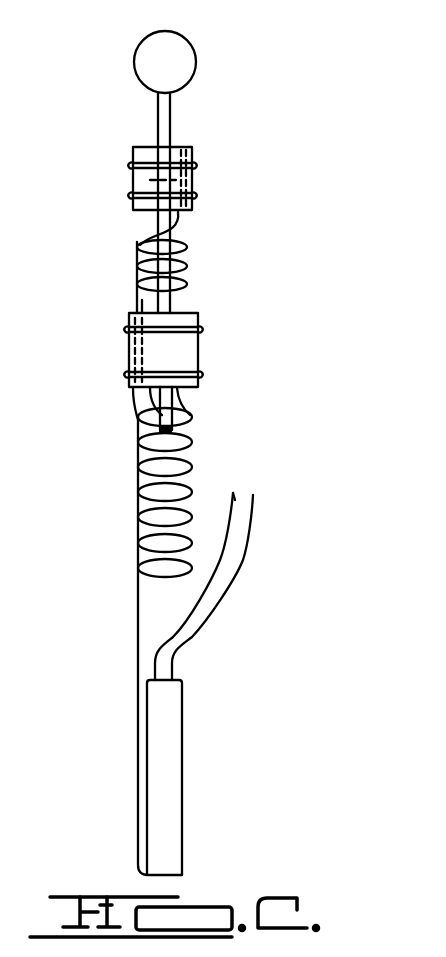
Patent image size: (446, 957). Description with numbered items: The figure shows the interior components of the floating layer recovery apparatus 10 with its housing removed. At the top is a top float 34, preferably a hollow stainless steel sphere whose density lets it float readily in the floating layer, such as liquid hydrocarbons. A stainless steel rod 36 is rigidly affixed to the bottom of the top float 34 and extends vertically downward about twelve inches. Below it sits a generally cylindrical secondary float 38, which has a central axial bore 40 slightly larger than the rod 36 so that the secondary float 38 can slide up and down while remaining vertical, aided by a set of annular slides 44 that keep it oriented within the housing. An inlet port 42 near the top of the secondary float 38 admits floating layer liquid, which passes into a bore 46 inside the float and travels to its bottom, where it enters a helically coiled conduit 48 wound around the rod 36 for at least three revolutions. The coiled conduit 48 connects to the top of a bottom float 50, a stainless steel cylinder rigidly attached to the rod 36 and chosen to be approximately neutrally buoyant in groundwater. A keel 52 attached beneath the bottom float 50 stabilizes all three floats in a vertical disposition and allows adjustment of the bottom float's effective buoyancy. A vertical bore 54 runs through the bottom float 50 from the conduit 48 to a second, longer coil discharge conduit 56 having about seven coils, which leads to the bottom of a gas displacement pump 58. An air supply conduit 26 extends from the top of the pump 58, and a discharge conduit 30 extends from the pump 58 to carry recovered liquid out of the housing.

The floating layer recovery apparatus 10 is at (265, 90).
The air supply conduit 26 is at (241, 496).
The discharge conduit 30 is at (250, 548).
The top float 34 is at (197, 59).
The rod 36 is at (156, 107).
The secondary float 38 is at (133, 187).
The central axial bore 40 is at (133, 177).
The inlet port 42 is at (193, 153).
The annular slides 44 is at (193, 164).
The bore 46 is at (193, 182).
The helically coiled conduit 48 is at (178, 253).
The bottom float 50 is at (190, 352).
The keel 52 is at (173, 397).
The vertical bore 54 is at (130, 348).
The second coil discharge conduit 56 is at (181, 439).
The gas displacement pump 58 is at (182, 758).